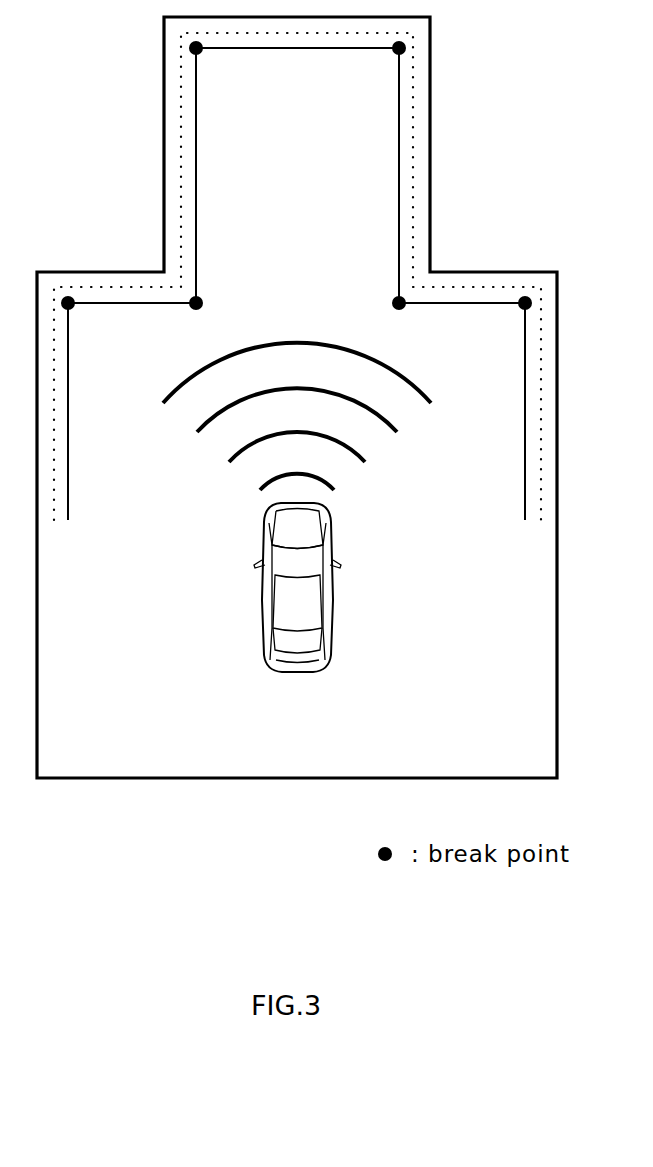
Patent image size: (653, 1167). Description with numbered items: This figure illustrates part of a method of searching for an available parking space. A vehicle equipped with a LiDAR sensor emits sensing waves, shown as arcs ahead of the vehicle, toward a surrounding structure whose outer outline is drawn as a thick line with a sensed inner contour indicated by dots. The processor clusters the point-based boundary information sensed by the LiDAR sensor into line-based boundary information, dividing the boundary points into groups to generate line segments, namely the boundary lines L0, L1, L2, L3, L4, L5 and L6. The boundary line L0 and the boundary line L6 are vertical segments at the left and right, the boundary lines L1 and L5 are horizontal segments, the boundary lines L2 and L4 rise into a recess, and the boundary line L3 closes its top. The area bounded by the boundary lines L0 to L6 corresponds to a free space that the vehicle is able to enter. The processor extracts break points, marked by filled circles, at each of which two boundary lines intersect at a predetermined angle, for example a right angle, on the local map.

The boundary line L0 is at (88, 411).
The boundary line L1 is at (132, 320).
The boundary line L2 is at (216, 175).
The boundary line L3 is at (297, 66).
The boundary line L4 is at (380, 175).
The boundary line L5 is at (462, 320).
The boundary line L6 is at (507, 411).